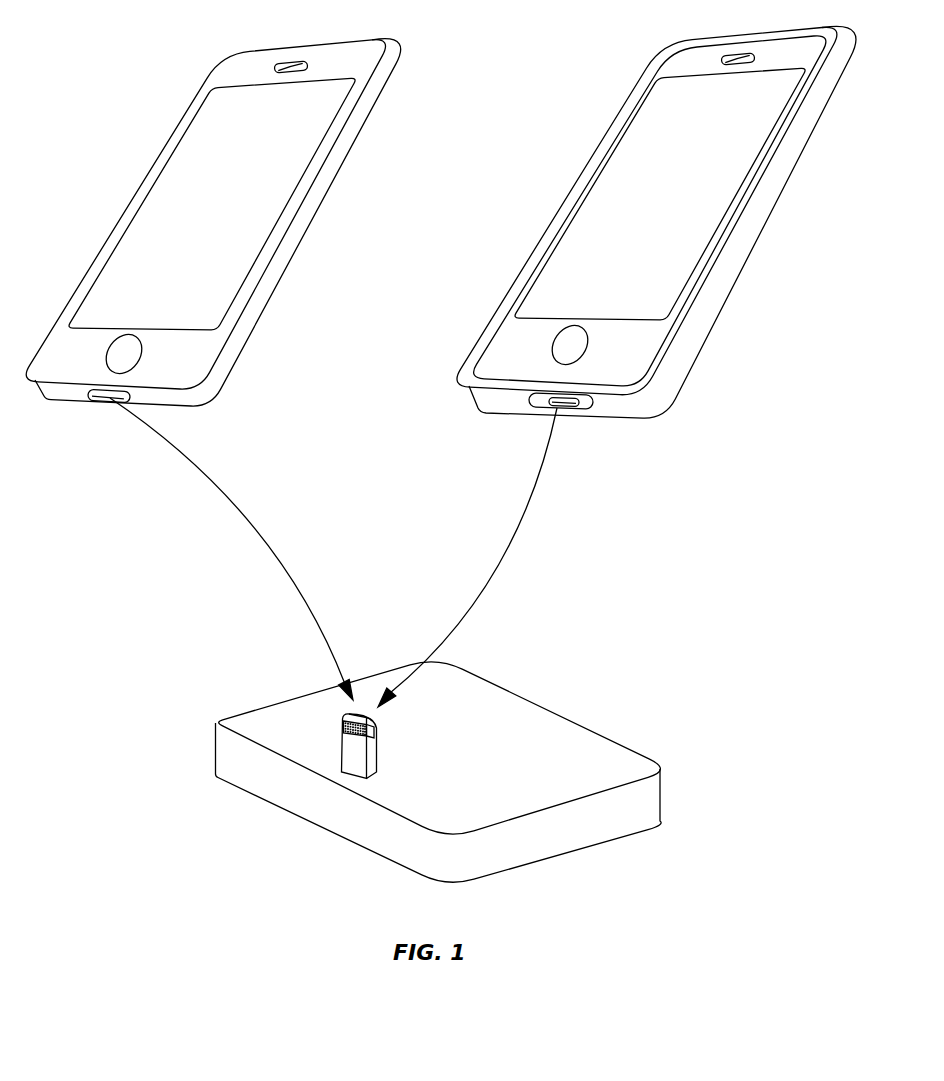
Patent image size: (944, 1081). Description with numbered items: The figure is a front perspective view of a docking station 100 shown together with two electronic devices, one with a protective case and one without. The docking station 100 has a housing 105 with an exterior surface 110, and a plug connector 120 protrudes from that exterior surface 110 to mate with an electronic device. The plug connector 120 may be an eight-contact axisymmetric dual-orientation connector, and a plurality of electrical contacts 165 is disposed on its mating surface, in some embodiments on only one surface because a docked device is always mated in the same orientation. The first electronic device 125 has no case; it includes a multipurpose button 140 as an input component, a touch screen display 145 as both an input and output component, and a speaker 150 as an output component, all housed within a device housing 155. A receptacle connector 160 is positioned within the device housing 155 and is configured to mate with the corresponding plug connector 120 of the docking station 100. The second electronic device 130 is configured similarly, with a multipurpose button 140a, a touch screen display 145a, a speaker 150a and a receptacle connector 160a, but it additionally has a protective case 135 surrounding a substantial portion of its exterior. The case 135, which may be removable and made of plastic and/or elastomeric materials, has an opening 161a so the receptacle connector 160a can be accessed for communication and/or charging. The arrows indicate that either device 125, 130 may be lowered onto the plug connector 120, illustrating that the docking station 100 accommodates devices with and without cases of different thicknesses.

The docking station 100 is at (391, 772).
The housing 105 is at (537, 680).
The exterior surface 110 is at (439, 772).
The plug connector 120 is at (405, 746).
The electronic device 125 is at (213, 227).
The electronic device 130 is at (656, 229).
The case 135 is at (656, 235).
The multipurpose button 140 is at (129, 357).
The multipurpose button 140a is at (576, 347).
The touch screen display 145 is at (262, 217).
The touch screen display 145a is at (717, 198).
The speaker 150 is at (287, 66).
The speaker 150a is at (734, 57).
The device housing 155 is at (348, 150).
The receptacle connector 160 is at (102, 397).
The receptacle connector 160a is at (552, 406).
The opening 161a is at (580, 409).
The electrical contacts 165 is at (378, 730).